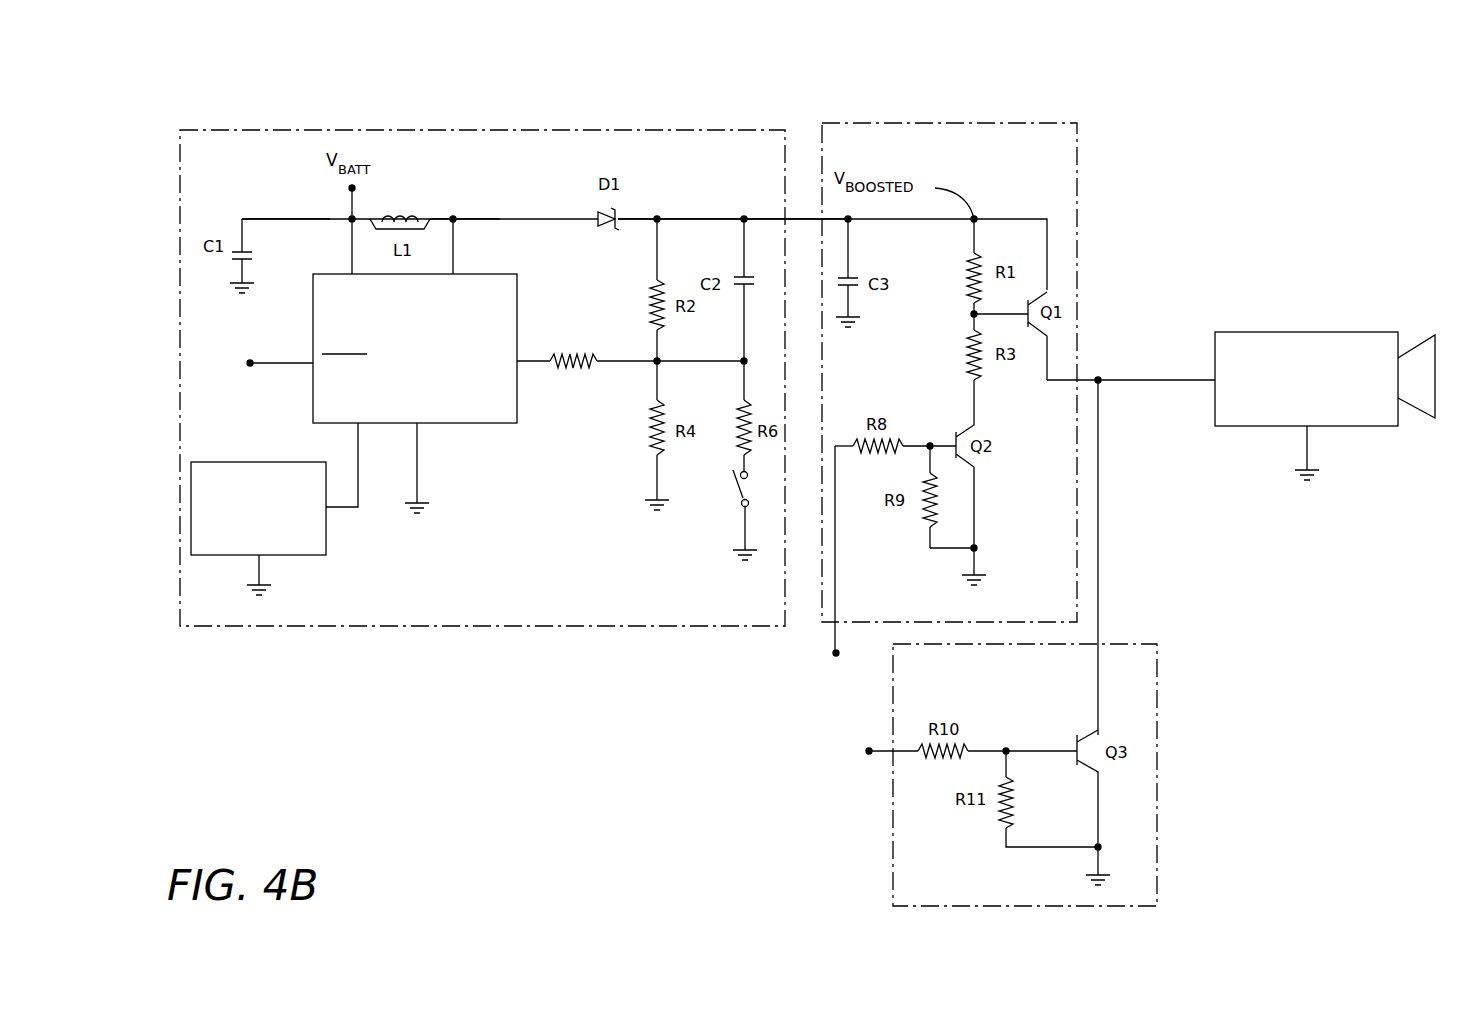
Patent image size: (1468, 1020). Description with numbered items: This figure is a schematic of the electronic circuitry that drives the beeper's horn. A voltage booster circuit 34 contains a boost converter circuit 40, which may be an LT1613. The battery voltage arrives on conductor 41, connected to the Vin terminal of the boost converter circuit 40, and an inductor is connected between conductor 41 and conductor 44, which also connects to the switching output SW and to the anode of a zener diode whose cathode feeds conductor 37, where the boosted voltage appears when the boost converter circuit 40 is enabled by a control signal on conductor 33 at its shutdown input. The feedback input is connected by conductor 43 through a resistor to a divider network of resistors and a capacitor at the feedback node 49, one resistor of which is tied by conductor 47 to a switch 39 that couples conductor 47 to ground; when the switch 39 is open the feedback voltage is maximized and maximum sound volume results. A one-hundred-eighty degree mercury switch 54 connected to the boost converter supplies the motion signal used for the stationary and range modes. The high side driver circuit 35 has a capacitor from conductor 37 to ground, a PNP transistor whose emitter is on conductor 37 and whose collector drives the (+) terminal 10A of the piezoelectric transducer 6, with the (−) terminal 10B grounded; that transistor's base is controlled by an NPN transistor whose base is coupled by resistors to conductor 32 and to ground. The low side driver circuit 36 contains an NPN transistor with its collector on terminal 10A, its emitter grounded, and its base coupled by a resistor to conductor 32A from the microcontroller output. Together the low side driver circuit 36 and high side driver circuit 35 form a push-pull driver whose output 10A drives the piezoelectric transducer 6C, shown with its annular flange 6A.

The conductor 41 is at (290, 219).
The conductor 44 is at (460, 219).
The conductor 37 is at (695, 219).
The high side driver circuit 35 is at (912, 123).
The conductor 33 is at (250, 363).
The boost converter circuit 40 is at (313, 374).
The conductor 43 is at (530, 361).
The feedback divider node 49 is at (655, 363).
The conductor 47 is at (741, 467).
The switch 39 is at (742, 502).
The 180 degree mercury switch 54 is at (245, 462).
The voltage booster circuit 34 is at (316, 627).
The conductor 32 is at (836, 653).
The conductor 32A is at (869, 751).
The low side driver circuit 36 is at (893, 843).
The first electrical contact element 10A is at (1133, 380).
The second electrical contact element 10B is at (1341, 453).
The piezoelectric transducer 6C is at (1305, 332).
The annular flange 6A is at (1412, 342).
The piezoelectric transducer 6 is at (1323, 407).